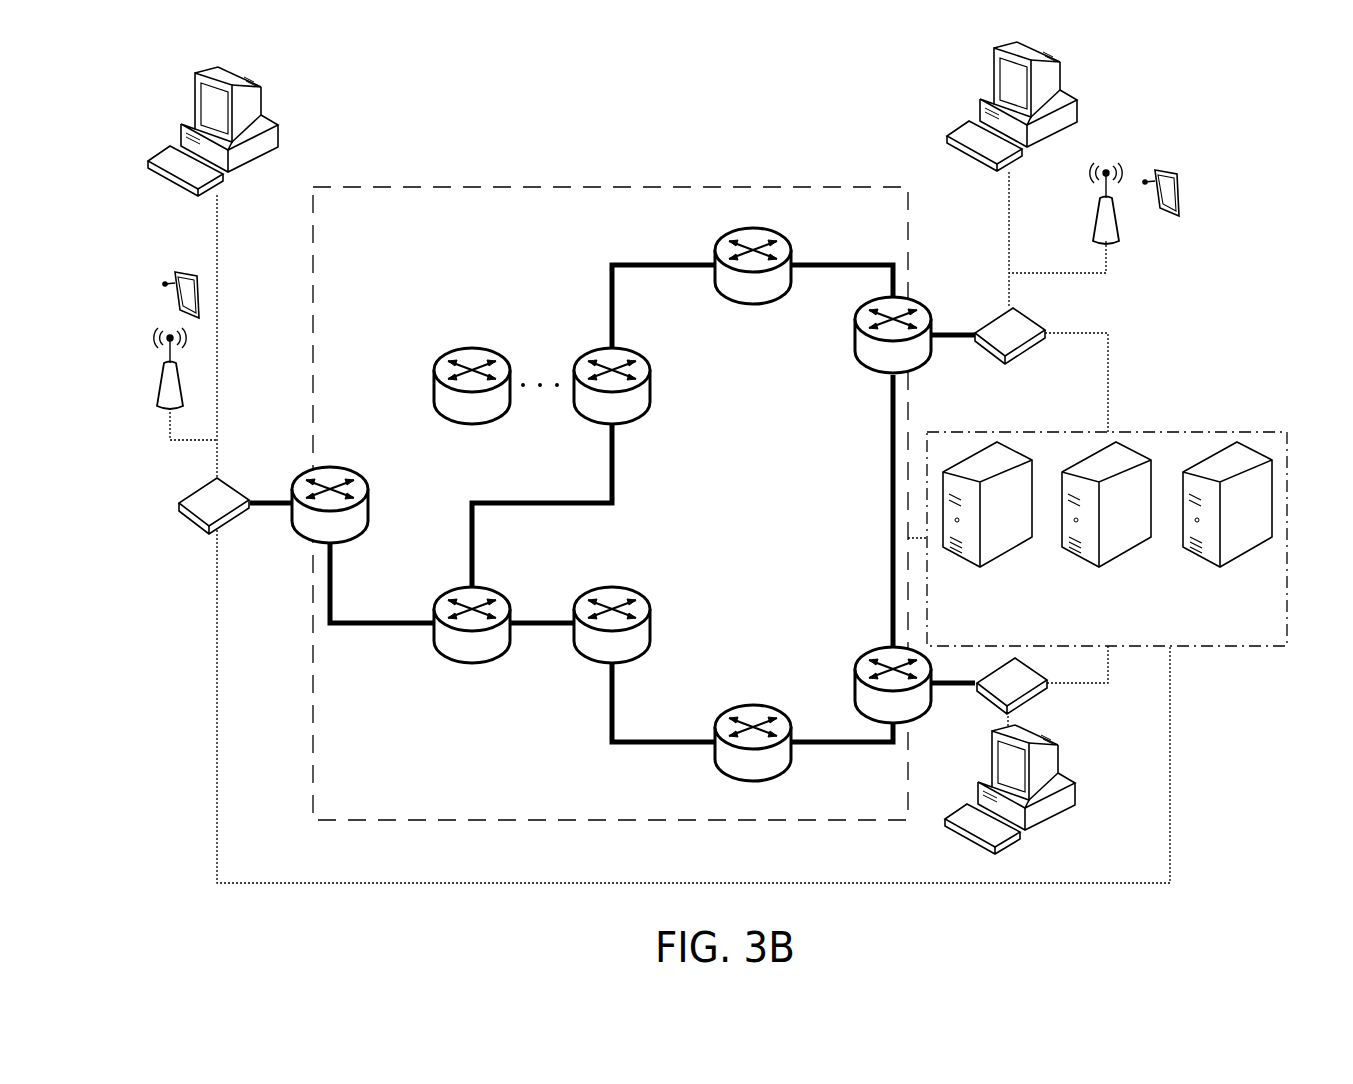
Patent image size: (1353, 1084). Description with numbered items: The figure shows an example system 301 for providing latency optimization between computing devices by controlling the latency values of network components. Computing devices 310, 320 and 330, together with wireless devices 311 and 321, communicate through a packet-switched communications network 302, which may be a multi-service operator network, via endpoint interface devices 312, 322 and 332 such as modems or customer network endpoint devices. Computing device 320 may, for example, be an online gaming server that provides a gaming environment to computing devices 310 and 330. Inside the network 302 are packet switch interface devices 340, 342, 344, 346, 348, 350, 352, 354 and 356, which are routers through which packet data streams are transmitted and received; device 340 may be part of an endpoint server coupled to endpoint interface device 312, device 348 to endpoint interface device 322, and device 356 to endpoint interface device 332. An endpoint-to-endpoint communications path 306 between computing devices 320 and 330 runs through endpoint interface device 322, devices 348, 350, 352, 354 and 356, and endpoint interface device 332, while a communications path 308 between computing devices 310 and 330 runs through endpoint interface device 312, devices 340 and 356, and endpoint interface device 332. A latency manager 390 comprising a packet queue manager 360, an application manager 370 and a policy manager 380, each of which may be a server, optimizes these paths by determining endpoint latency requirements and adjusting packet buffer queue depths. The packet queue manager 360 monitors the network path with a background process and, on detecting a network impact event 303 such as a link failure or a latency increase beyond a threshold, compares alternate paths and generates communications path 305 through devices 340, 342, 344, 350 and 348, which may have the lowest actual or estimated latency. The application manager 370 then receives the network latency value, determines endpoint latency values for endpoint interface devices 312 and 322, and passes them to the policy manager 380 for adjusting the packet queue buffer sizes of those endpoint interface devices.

The system 301 is at (743, 125).
The packet-switched communications network 302 is at (847, 185).
The network impact event 303 is at (549, 384).
The communications path 305 is at (612, 265).
The endpoint-to-endpoint communications path 306 is at (612, 745).
The endpoint-to-endpoint communications path 308 is at (891, 468).
The computing device 310 is at (1078, 96).
The wireless device 311 is at (1175, 173).
The endpoint interface device 312 is at (1020, 352).
The computing device 320 is at (186, 112).
The wireless device 321 is at (181, 270).
The endpoint interface device 322 is at (202, 527).
The computing device 330 is at (1083, 786).
The endpoint interface device 332 is at (1000, 708).
The packet switch interface device 340 is at (863, 360).
The packet switch interface device 342 is at (758, 228).
The packet switch interface device 344 is at (622, 424).
The packet switch interface device 346 is at (481, 424).
The packet switch interface device 348 is at (302, 540).
The packet switch interface device 350 is at (471, 663).
The packet switch interface device 352 is at (599, 663).
The packet switch interface device 354 is at (750, 786).
The packet switch interface device 356 is at (867, 650).
The packet queue manager 360 is at (971, 642).
The application manager 370 is at (1090, 642).
The policy manager 380 is at (1210, 642).
The latency manager 390 is at (1165, 431).